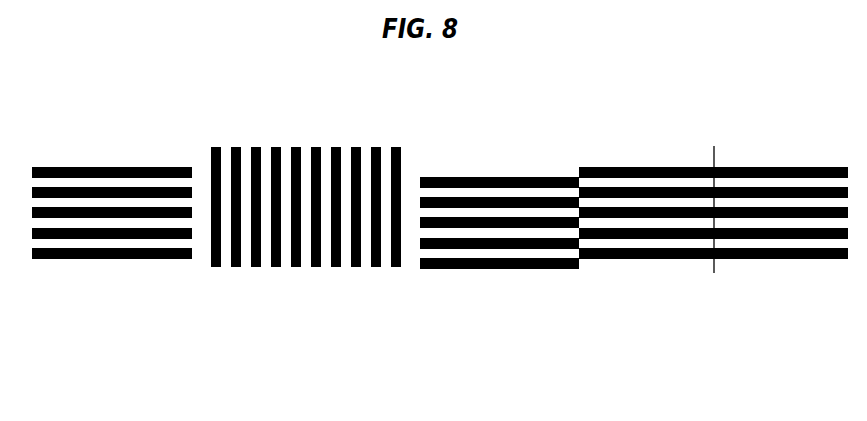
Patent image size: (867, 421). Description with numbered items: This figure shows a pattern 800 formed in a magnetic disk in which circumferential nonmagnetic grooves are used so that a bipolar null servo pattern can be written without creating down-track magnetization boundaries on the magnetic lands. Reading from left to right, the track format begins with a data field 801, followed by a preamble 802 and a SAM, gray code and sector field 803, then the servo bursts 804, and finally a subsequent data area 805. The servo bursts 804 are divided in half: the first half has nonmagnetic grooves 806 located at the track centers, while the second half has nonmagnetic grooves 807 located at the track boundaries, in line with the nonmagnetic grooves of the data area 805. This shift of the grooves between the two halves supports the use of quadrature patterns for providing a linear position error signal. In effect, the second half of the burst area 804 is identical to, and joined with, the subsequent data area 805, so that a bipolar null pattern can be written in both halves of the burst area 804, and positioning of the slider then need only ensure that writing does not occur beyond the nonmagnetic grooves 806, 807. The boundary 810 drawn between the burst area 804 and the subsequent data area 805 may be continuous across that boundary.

The pattern 800 is at (277, 93).
The data field 801 is at (31, 297).
The preamble field 802 is at (205, 297).
The SAM / gray code / sector field 803 is at (307, 297).
The servo bursts 804 is at (420, 297).
The data area 805 is at (850, 297).
The nonmagnetic grooves 806 is at (510, 177).
The nonmagnetic grooves 807 is at (648, 167).
The boundary 810 is at (718, 154).